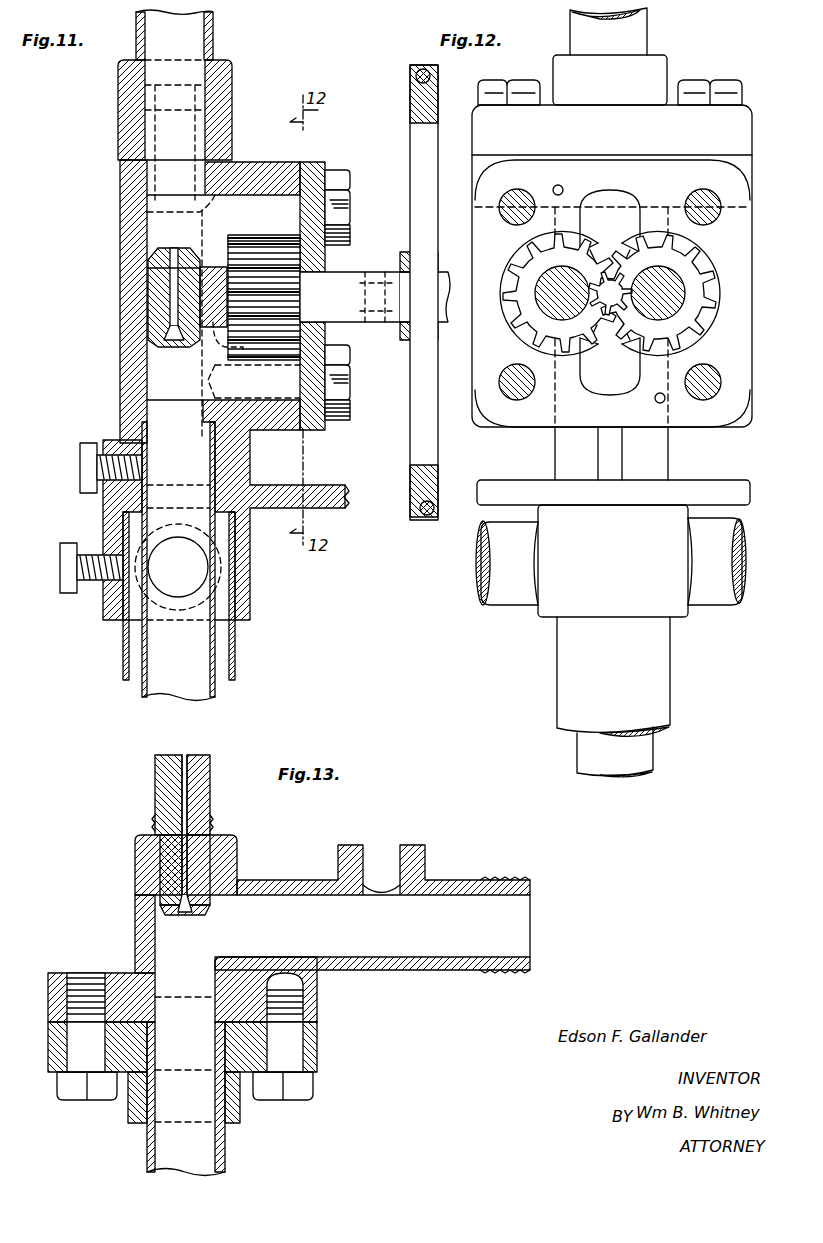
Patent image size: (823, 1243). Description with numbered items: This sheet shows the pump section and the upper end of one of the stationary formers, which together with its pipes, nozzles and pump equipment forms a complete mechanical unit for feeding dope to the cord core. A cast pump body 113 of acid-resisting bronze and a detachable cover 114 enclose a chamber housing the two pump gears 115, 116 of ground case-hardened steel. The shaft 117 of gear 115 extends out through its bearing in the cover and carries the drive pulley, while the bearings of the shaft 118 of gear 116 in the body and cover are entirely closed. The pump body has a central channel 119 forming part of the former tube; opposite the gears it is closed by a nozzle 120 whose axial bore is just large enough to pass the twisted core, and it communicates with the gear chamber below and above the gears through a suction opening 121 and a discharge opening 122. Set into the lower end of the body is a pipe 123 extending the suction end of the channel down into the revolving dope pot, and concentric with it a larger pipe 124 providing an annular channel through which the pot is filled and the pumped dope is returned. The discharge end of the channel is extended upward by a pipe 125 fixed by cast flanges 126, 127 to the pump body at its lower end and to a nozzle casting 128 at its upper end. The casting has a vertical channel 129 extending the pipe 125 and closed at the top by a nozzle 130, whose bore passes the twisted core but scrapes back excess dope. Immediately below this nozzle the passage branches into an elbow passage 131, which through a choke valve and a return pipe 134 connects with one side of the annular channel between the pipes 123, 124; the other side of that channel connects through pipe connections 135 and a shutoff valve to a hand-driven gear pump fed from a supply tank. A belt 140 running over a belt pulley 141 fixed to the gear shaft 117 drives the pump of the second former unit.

In FIG. 11, the pump body 113 is at (222, 168).
In FIG. 12, the pump body 113 is at (733, 226).
In FIG. 11, the detachable cover 114 is at (312, 165).
In FIG. 11, the pump gear 115 is at (268, 302).
In FIG. 12, the pump gear 115 is at (520, 322).
In FIG. 12, the pump gear 116 is at (712, 296).
In FIG. 11, the shaft 117 is at (428, 302).
In FIG. 12, the shaft 117 is at (564, 325).
In FIG. 11, the shaft 118 is at (326, 376).
In FIG. 12, the shaft 118 is at (682, 283).
In FIG. 11, the central channel 119 is at (150, 380).
In FIG. 11, the nozzle 120 is at (162, 310).
In FIG. 12, the nozzle 120 is at (608, 338).
In FIG. 11, the suction opening 121 is at (222, 372).
In FIG. 12, the suction opening 121 is at (610, 360).
In FIG. 11, the discharge opening 122 is at (216, 252).
In FIG. 12, the discharge opening 122 is at (610, 272).
In FIG. 11, the pipe 123 is at (165, 655).
In FIG. 12, the pipe 123 is at (638, 757).
In FIG. 11, the larger pipe 124 is at (236, 662).
In FIG. 12, the larger pipe 124 is at (650, 686).
In FIG. 11, the pipe 125 is at (213, 40).
In FIG. 12, the pipe 125 is at (630, 36).
In FIG. 13, the pipe 125 is at (225, 1141).
In FIG. 11, the cast flange 126 is at (232, 78).
In FIG. 12, the cast flange 126 is at (640, 120).
In FIG. 13, the cast flange 127 is at (318, 1050).
In FIG. 13, the nozzle casting 128 is at (137, 920).
In FIG. 13, the vertical channel 129 is at (175, 978).
In FIG. 13, the nozzle 130 is at (210, 818).
In FIG. 13, the elbow passage 131 is at (272, 918).
In FIG. 12, the return pipe 134 is at (514, 588).
In FIG. 11, the pipe connections 135 is at (190, 575).
In FIG. 12, the pipe connections 135 is at (712, 590).
In FIG. 11, the belt 140 is at (429, 72).
In FIG. 11, the belt pulley 141 is at (410, 115).